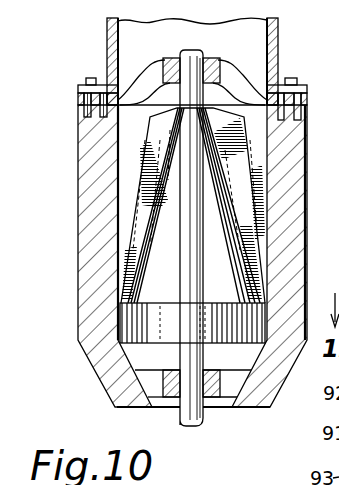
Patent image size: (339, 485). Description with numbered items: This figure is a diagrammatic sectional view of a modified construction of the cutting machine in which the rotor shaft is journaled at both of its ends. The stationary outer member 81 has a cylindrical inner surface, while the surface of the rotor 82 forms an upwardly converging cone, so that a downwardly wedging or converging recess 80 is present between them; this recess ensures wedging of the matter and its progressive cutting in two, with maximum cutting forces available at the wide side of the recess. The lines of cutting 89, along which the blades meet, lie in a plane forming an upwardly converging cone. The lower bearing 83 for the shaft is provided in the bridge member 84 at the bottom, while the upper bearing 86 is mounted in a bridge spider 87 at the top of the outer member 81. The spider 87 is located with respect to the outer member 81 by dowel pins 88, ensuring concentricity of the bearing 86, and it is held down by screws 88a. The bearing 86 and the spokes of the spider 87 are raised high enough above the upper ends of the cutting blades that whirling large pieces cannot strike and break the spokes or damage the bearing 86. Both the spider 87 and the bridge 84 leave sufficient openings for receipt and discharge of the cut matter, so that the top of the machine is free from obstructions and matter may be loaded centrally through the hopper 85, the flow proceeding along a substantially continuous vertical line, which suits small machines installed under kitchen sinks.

The recess 80 is at (189, 256).
The outer member 81 is at (100, 283).
The rotor 82 is at (150, 233).
The lower bearing 83 is at (172, 397).
The bridge member 84 is at (230, 388).
The hopper 85 is at (272, 44).
The upper bearing 86 is at (175, 56).
The bridge spider 87 is at (233, 62).
The dowel pins 88 is at (85, 106).
The screws 88a is at (80, 85).
The lines of cutting 89 is at (241, 146).